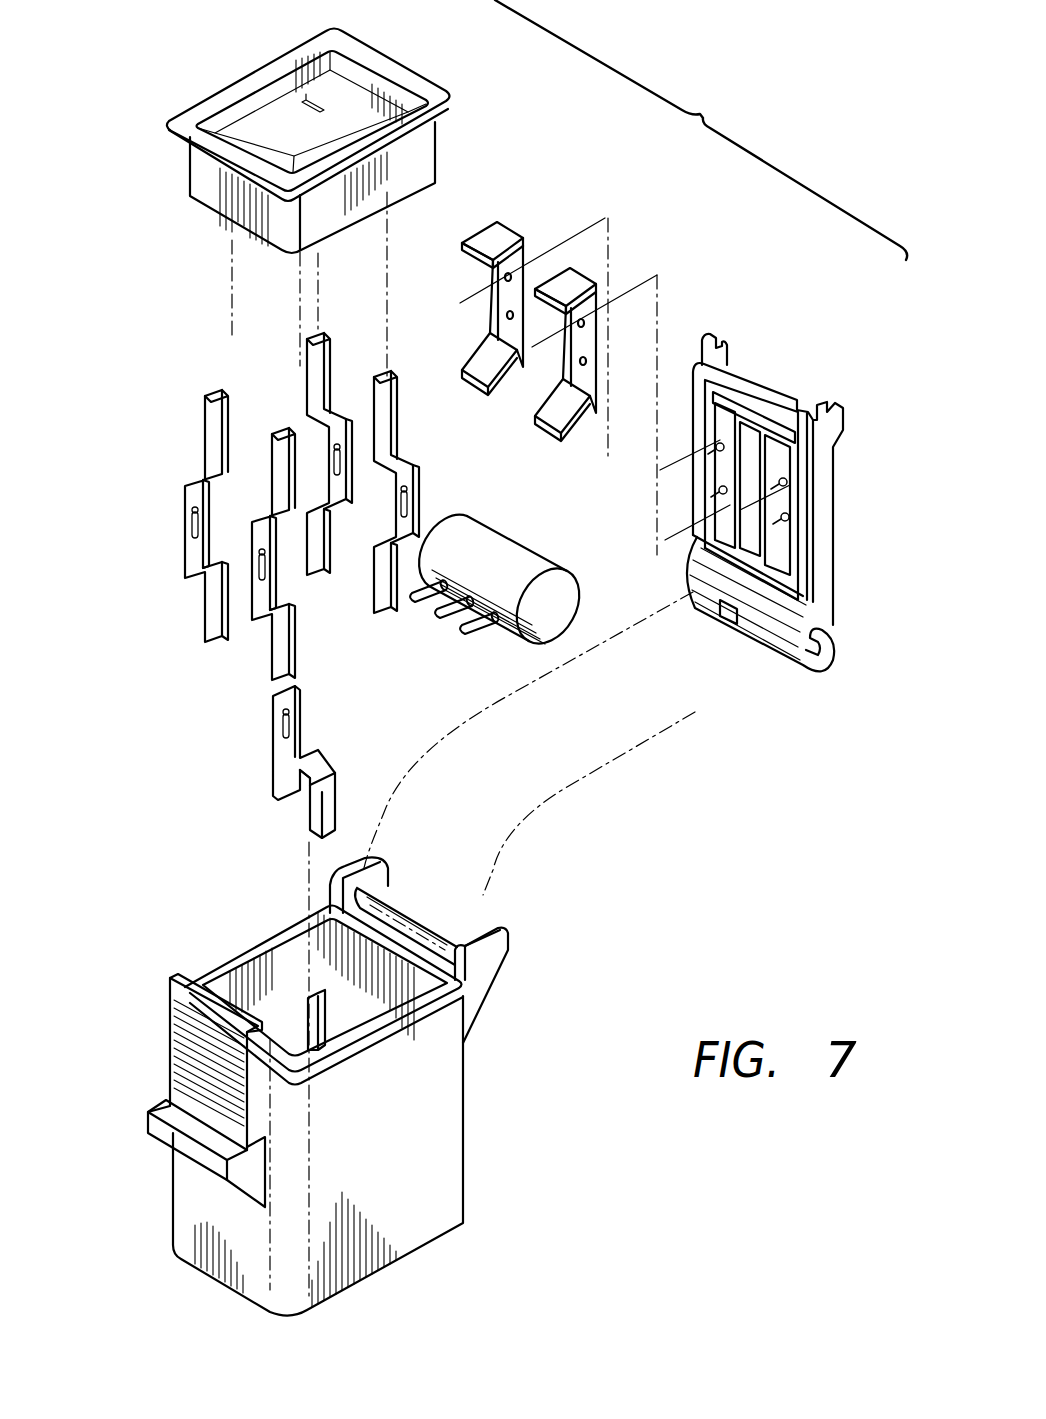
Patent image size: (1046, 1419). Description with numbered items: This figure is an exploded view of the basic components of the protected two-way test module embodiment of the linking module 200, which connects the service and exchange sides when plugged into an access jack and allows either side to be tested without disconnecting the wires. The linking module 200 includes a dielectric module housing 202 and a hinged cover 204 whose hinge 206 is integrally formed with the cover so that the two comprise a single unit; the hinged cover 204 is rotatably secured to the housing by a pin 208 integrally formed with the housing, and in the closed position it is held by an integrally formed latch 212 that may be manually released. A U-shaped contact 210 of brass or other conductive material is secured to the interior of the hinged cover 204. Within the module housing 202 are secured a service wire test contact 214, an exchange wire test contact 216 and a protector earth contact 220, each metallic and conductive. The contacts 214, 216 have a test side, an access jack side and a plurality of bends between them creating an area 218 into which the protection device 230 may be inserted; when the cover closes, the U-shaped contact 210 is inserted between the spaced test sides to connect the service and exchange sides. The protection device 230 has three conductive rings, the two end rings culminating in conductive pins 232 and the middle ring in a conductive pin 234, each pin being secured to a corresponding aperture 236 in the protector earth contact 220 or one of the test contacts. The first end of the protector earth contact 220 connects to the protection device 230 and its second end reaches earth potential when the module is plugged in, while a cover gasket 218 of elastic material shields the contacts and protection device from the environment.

The linking module 200 is at (701, 130).
The module housing 202 is at (435, 1158).
The hinged cover 204 is at (845, 505).
The hinge 206 is at (820, 662).
The pin 208 is at (437, 915).
The U-shaped contact 210 is at (520, 268).
The latch 212 is at (178, 983).
The service wire test contact 214 is at (300, 368).
The exchange wire test contact 216 is at (207, 425).
The cover gasket 218 is at (222, 198).
The protector earth contact 220 is at (285, 768).
The protection device 230 is at (514, 556).
The conductive pins 232 is at (424, 590).
The conductive pin 234 is at (450, 614).
The aperture 236 is at (192, 519).